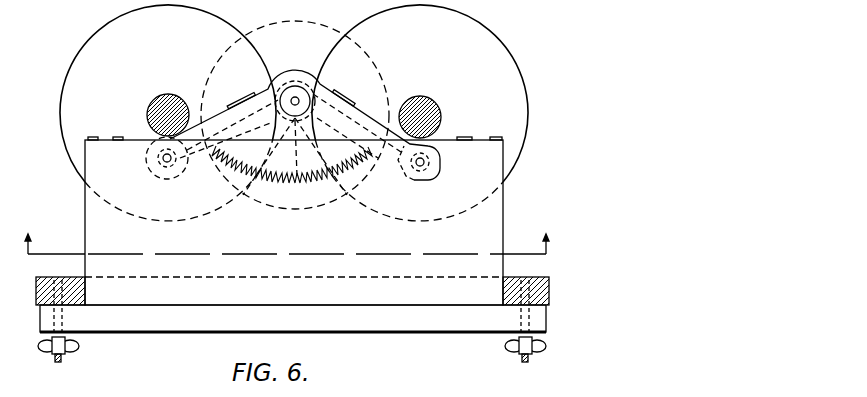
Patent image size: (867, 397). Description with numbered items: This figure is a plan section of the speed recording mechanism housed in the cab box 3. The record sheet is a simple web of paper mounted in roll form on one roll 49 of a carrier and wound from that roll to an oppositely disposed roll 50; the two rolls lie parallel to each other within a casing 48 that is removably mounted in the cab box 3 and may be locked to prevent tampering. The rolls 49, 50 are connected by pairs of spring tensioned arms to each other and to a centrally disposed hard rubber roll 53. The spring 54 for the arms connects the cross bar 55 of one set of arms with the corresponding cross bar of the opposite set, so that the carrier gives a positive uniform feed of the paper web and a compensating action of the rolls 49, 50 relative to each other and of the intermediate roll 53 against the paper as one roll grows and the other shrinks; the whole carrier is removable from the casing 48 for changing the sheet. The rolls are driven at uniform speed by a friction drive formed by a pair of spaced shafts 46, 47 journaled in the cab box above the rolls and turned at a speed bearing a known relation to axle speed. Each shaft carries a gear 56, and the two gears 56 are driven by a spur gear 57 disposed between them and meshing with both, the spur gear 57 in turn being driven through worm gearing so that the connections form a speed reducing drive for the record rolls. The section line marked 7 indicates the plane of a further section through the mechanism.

The cab box 3 is at (36, 288).
The section line 7- 7 is at (286, 245).
The shaft 46 is at (148, 108).
The shaft 47 is at (430, 105).
The casing 48 is at (504, 222).
The roll 49 is at (171, 179).
The roll 50 is at (431, 177).
The hard rubber roll 53 is at (297, 124).
The spring 54 is at (300, 180).
The cross bar 55 is at (379, 166).
The gear 56 is at (69, 165).
The spur gear 57 is at (338, 32).